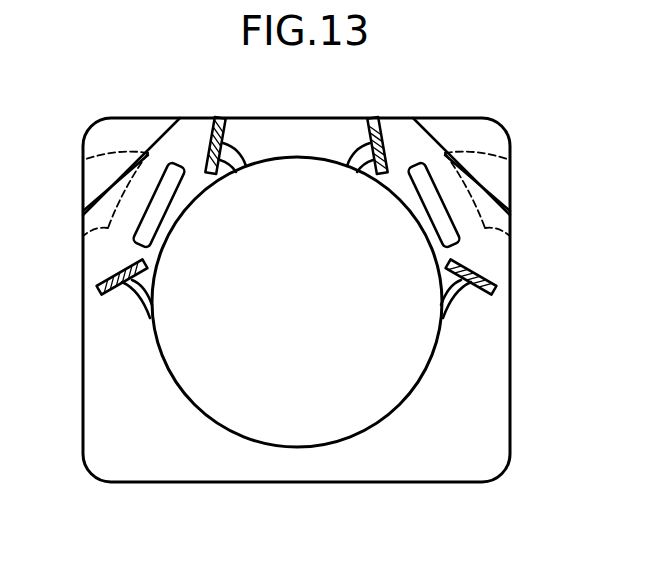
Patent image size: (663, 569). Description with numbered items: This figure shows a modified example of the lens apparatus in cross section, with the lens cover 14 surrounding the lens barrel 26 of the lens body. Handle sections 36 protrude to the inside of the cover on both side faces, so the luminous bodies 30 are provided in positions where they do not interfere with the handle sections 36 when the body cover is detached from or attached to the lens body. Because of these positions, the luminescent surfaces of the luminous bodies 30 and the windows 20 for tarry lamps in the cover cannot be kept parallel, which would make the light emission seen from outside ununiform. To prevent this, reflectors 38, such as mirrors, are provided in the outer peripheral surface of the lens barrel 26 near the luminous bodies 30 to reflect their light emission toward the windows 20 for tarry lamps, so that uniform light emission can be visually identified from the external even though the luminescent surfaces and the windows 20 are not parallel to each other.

The lens cover 14 is at (241, 465).
The window for tarry lamp 20 is at (140, 130).
The lens barrel 26 is at (417, 388).
The luminous body 30 is at (174, 192).
The handle section 36 is at (83, 236).
The reflector 38 is at (384, 130).